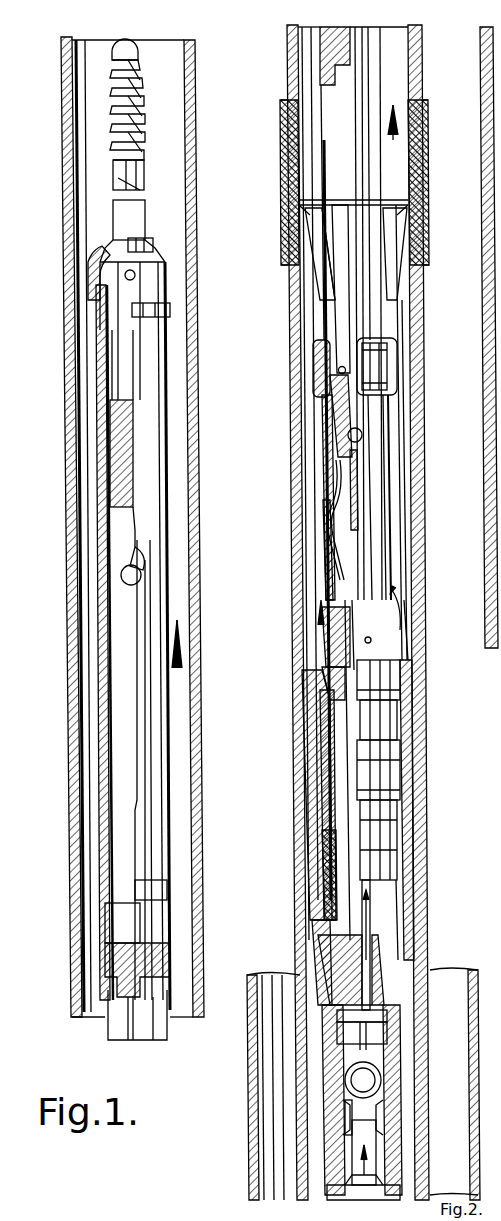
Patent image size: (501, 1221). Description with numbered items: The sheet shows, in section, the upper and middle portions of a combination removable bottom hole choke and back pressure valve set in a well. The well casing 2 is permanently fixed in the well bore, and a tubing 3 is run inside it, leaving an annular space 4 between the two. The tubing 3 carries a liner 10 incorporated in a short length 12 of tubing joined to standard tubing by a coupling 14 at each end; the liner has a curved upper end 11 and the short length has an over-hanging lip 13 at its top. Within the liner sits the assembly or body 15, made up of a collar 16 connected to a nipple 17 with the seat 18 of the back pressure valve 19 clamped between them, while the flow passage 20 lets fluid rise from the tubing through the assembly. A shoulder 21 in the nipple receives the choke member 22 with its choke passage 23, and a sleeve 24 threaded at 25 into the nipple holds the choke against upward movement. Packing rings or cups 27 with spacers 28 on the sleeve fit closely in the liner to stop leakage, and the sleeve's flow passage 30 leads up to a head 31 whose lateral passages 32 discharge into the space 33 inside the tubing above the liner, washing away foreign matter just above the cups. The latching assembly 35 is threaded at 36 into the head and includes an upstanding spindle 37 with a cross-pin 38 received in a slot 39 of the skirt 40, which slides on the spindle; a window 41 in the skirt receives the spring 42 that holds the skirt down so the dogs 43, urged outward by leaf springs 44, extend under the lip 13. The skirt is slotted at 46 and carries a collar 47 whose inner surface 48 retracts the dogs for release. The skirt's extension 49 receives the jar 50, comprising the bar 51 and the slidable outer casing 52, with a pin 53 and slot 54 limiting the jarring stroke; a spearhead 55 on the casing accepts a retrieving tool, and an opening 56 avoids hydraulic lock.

In FIG. 2, the well casing 2 is at (470, 972).
In FIG. 1, the tubing 3 is at (192, 292).
In FIG. 2, the tubing 3 is at (425, 950).
In FIG. 2, the annular space 4 is at (443, 1060).
In FIG. 2, the liner 10 is at (405, 905).
In FIG. 2, the curved upper end 11 is at (405, 642).
In FIG. 2, the short length of tubing 12 is at (415, 523).
In FIG. 2, the over-hanging lip 13 is at (428, 192).
In FIG. 2, the coupling 14 is at (428, 140).
In FIG. 2, the assembly or body 15 is at (385, 465).
In FIG. 2, the collar 16 is at (388, 1170).
In FIG. 2, the nipple 17 is at (405, 1087).
In FIG. 2, the seat 18 is at (383, 1125).
In FIG. 2, the back pressure valve 19 is at (372, 1065).
In FIG. 2, the flow passage 20 is at (345, 1128).
In FIG. 2, the shoulder 21 is at (380, 1022).
In FIG. 2, the choke member 22 is at (345, 950).
In FIG. 2, the choke passage 23 is at (340, 975).
In FIG. 2, the sleeve 24 is at (330, 880).
In FIG. 2, the threads 25 is at (365, 967).
In FIG. 2, the packing rings or cups 27 is at (325, 840).
In FIG. 2, the spacers 28 is at (330, 755).
In FIG. 2, the flow passage 30 is at (352, 700).
In FIG. 2, the head 31 is at (392, 612).
In FIG. 2, the lateral passages 32 is at (325, 647).
In FIG. 2, the space 33 is at (395, 490).
In FIG. 2, the latching assembly 35 is at (318, 420).
In FIG. 2, the threads 36 is at (320, 616).
In FIG. 2, the spindle 37 is at (358, 475).
In FIG. 2, the cross-pin 38 is at (358, 430).
In FIG. 2, the slot 39 is at (368, 447).
In FIG. 2, the skirt 40 is at (385, 565).
In FIG. 2, the window 41 is at (330, 535).
In FIG. 2, the spring 42 is at (330, 505).
In FIG. 2, the dogs 43 is at (322, 272).
In FIG. 2, the leaf springs 44 is at (340, 290).
In FIG. 2, the slot 46 is at (330, 133).
In FIG. 2, the collar 47 is at (392, 355).
In FIG. 2, the inner surface 48 is at (318, 338).
In FIG. 1, the extension 49 is at (118, 963).
In FIG. 2, the extension 49 is at (330, 38).
In FIG. 1, the jar 50 is at (100, 640).
In FIG. 1, the bar 51 is at (125, 724).
In FIG. 1, the outer casing 52 is at (100, 473).
In FIG. 1, the pin 53 is at (121, 574).
In FIG. 1, the slot 54 is at (137, 548).
In FIG. 1, the spearhead 55 is at (122, 107).
In FIG. 1, the opening 56 is at (100, 272).